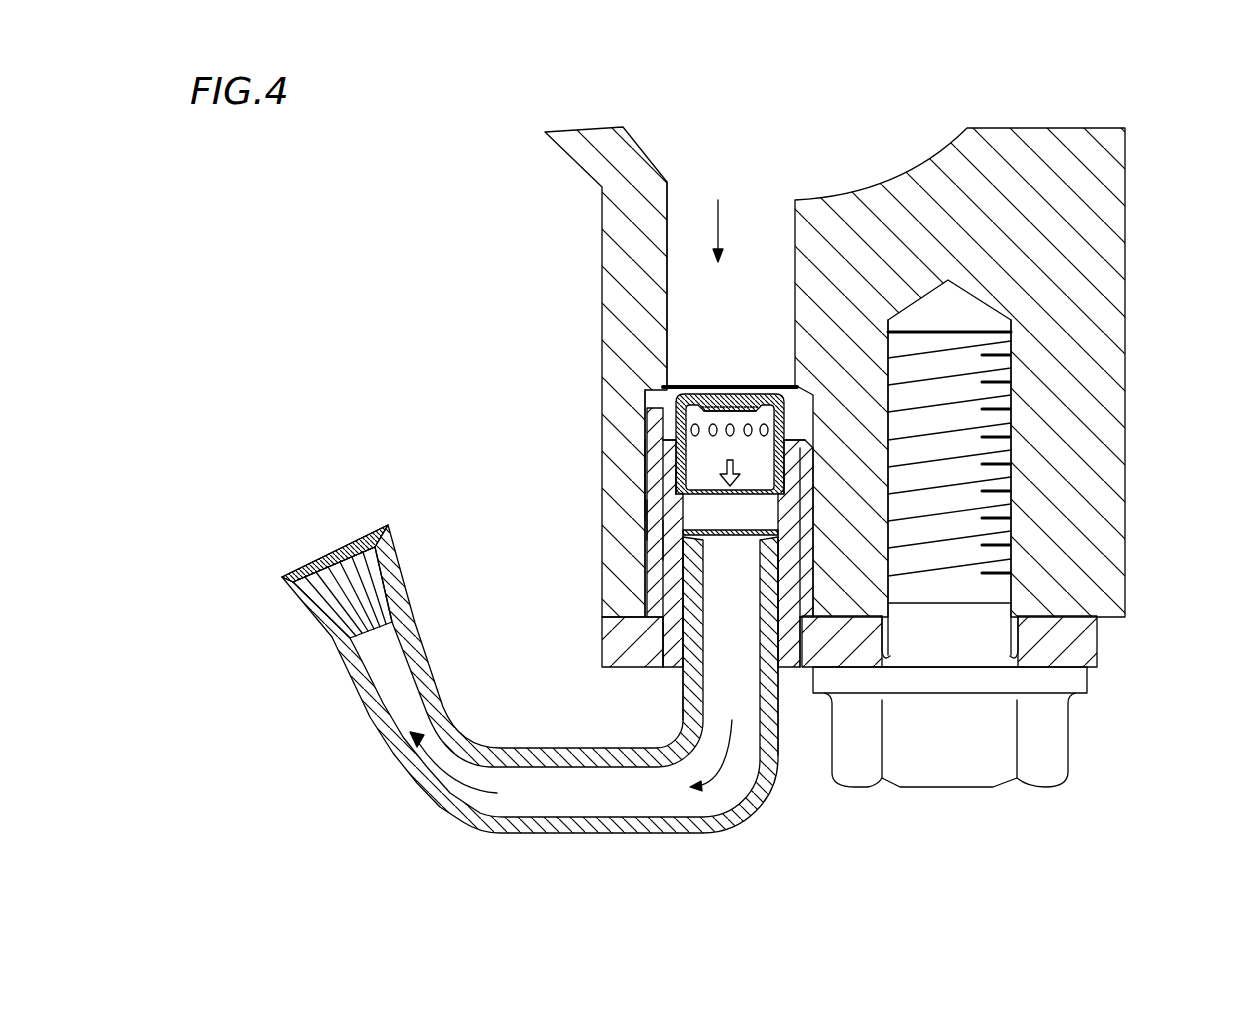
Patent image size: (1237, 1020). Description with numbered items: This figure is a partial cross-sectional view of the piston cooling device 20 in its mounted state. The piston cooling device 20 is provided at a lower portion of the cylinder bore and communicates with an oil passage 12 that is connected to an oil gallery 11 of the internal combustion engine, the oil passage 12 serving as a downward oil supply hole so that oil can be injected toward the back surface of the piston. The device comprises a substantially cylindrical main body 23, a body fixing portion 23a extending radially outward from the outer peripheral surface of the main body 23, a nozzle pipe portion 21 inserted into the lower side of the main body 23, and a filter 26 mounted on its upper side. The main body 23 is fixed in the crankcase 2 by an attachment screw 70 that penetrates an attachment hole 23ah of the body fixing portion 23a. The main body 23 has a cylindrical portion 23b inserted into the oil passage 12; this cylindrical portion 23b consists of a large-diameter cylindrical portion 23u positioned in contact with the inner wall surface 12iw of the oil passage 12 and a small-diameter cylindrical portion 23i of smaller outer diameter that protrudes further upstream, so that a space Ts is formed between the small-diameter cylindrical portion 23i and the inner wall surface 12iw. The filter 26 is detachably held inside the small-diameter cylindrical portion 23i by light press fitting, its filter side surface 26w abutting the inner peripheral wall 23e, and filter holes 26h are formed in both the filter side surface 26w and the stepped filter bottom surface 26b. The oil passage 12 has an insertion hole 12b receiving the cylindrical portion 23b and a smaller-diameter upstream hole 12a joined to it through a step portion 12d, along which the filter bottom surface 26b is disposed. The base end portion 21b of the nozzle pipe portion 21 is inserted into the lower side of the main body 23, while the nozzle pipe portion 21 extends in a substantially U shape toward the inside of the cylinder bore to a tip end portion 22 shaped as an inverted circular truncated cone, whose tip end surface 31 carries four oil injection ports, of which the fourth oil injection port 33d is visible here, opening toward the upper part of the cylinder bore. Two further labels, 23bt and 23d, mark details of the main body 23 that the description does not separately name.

The crankcase 2 is at (1085, 515).
The oil gallery 11 is at (855, 149).
The oil passage 12 is at (559, 397).
The upstream hole 12a is at (695, 297).
The insertion hole 12b is at (650, 405).
The step portion 12d is at (683, 384).
The inner wall surface 12iw is at (645, 480).
The piston cooling device 20 is at (526, 674).
The nozzle pipe portion 21 is at (530, 679).
The base end portion 21b is at (690, 688).
The tip end portion 22 is at (341, 563).
The main body 23 is at (668, 537).
The body fixing portion 23a is at (1010, 644).
The attachment hole 23ah is at (1098, 624).
The cylindrical portion 23b is at (675, 553).
The top surface of body wall 23bt is at (660, 440).
The bottom wall 23d is at (772, 503).
The inner peripheral wall 23e is at (655, 520).
The small-diameter cylindrical portion 23i is at (660, 540).
The large-diameter cylindrical portion 23u is at (660, 577).
The filter 26 is at (698, 387).
The filter bottom surface 26b is at (740, 231).
The filter holes 26h is at (717, 393).
The filter side surface 26w is at (690, 407).
The tip end surface 31 is at (330, 568).
The fourth oil injection port 33d is at (398, 548).
The attachment screw 70 is at (1062, 765).
The space Ts is at (694, 490).